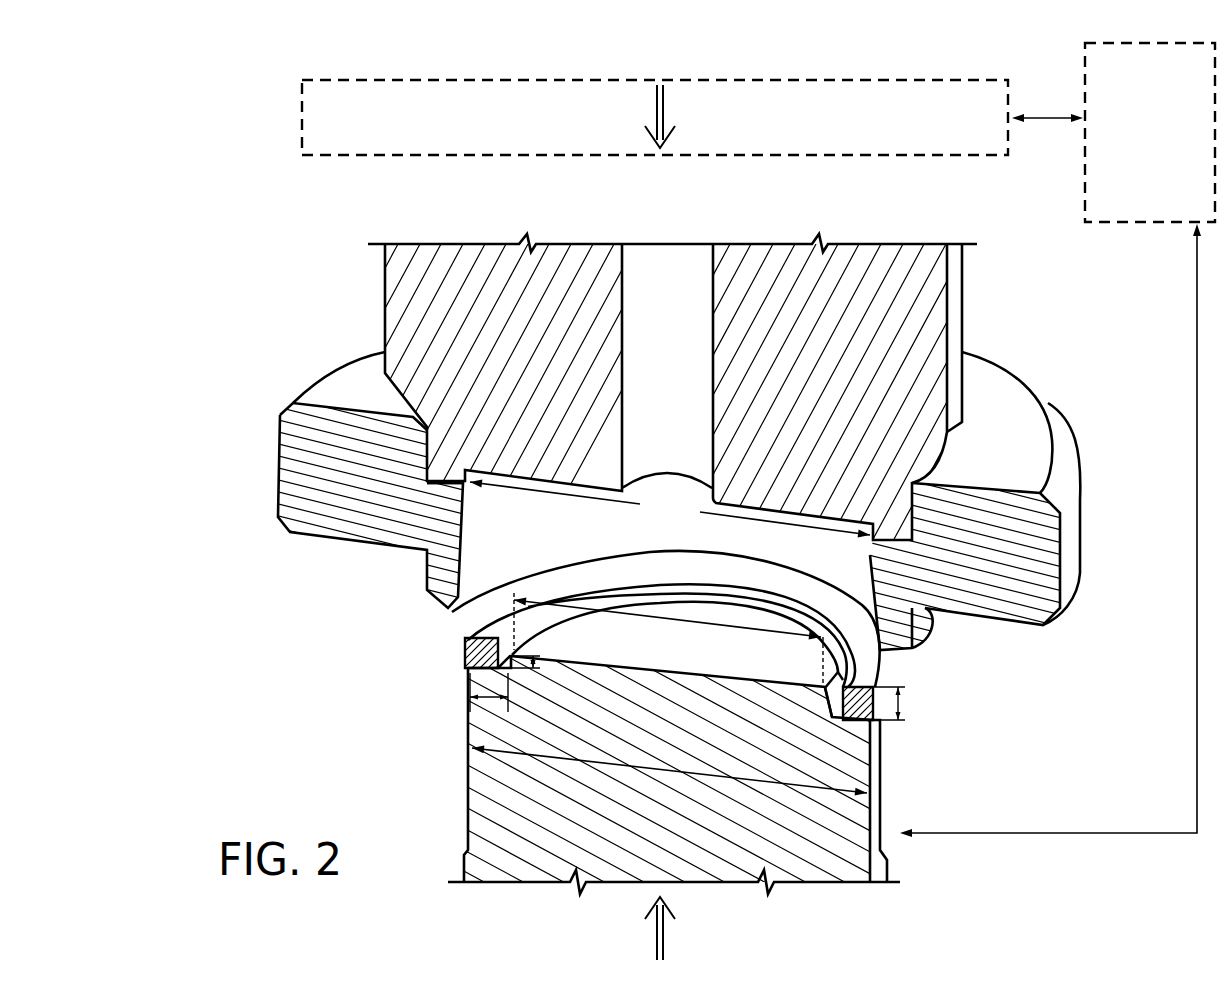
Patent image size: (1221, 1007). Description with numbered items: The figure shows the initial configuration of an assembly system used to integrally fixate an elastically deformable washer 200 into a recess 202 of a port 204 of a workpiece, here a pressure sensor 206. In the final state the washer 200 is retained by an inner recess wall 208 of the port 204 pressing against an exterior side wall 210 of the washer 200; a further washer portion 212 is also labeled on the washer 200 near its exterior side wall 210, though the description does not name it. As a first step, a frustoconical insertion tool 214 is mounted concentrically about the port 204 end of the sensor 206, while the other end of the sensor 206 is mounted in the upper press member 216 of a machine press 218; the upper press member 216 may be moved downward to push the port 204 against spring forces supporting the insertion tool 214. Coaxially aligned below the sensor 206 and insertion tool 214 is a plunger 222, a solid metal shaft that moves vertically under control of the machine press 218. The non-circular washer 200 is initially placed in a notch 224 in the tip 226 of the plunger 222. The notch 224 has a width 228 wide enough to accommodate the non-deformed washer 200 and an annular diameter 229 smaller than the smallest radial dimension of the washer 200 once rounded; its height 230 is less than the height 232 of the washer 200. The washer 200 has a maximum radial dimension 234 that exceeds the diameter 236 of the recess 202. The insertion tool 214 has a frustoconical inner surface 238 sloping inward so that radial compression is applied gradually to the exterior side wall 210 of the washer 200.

The elastically deformable washer 200 is at (697, 593).
The recess 202 is at (797, 522).
The port 204 is at (446, 489).
The pressure sensor 206 is at (813, 317).
The inner recess wall 208 is at (469, 478).
The exterior side wall 210 is at (465, 658).
The ring edge portion 212 is at (471, 638).
The frustoconical insertion tool 214 is at (293, 468).
The upper press member 216 is at (428, 135).
The machine press 218 is at (1176, 102).
The plunger 222 is at (456, 777).
The notch 224 is at (833, 718).
The tip 226 is at (768, 667).
The width 228 is at (490, 699).
The annular diameter 229 is at (670, 614).
The height 230 is at (540, 662).
The height 232 is at (903, 703).
The maximum radial dimension 234 is at (643, 768).
The diameter 236 is at (670, 509).
The frustoconical inner surface 238 is at (868, 612).